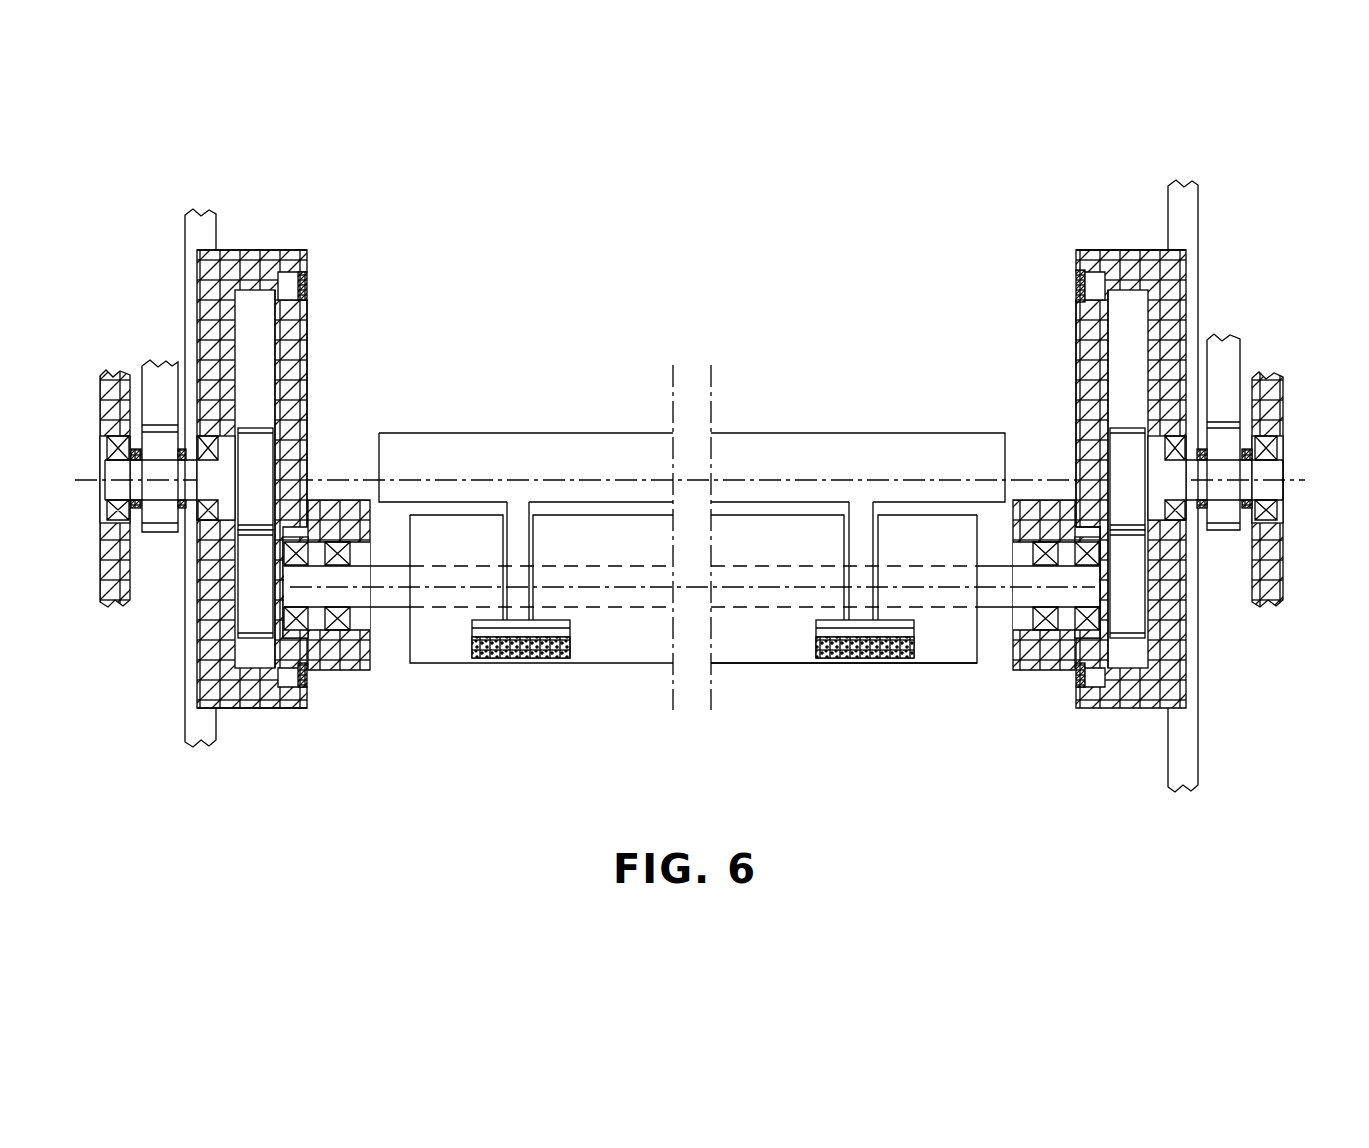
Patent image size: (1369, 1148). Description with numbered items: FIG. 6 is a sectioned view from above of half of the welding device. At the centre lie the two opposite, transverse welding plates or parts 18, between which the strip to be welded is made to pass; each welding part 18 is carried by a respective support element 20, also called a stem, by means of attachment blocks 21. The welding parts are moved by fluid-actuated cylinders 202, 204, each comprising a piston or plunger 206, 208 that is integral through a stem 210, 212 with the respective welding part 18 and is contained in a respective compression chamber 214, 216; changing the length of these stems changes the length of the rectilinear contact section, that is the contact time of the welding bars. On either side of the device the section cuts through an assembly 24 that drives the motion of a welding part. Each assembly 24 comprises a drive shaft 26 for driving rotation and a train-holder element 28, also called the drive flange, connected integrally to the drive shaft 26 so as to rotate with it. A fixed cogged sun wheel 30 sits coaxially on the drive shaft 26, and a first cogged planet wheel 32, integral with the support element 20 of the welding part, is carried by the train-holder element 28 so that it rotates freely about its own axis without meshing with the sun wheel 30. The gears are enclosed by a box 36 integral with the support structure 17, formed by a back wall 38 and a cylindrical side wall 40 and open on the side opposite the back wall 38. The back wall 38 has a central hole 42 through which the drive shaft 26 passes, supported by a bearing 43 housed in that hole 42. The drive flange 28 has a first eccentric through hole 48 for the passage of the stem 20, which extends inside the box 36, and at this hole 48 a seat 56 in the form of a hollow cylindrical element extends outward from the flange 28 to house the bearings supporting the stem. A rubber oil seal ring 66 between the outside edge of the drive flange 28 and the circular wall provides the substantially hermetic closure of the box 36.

The support structure 17 is at (205, 215).
The welding plate 18 is at (508, 448).
The support element 20 is at (988, 595).
The attachment block 21 is at (746, 643).
The assembly 24 is at (322, 305).
The drive shaft 26 is at (180, 488).
The train-holder element 28 is at (292, 372).
The fixed cogged sun wheel 30 is at (262, 452).
The first cogged planet wheel 32 is at (255, 620).
The box 36 is at (232, 728).
The back wall 38 is at (208, 292).
The cylindrical side wall 40 is at (245, 262).
The central hole 42 is at (1170, 438).
The bearing 43 is at (1172, 517).
The first eccentric through hole 48 is at (1090, 525).
The seat 56 is at (340, 650).
The rubber oil seal ring 66 is at (303, 280).
The cylinder 202 is at (462, 670).
The cylinder 204 is at (857, 672).
The piston 206 is at (542, 630).
The piston 208 is at (882, 630).
The stem 210 is at (522, 583).
The stem 212 is at (867, 583).
The compression chamber 214 is at (495, 647).
The compression chamber 216 is at (830, 657).